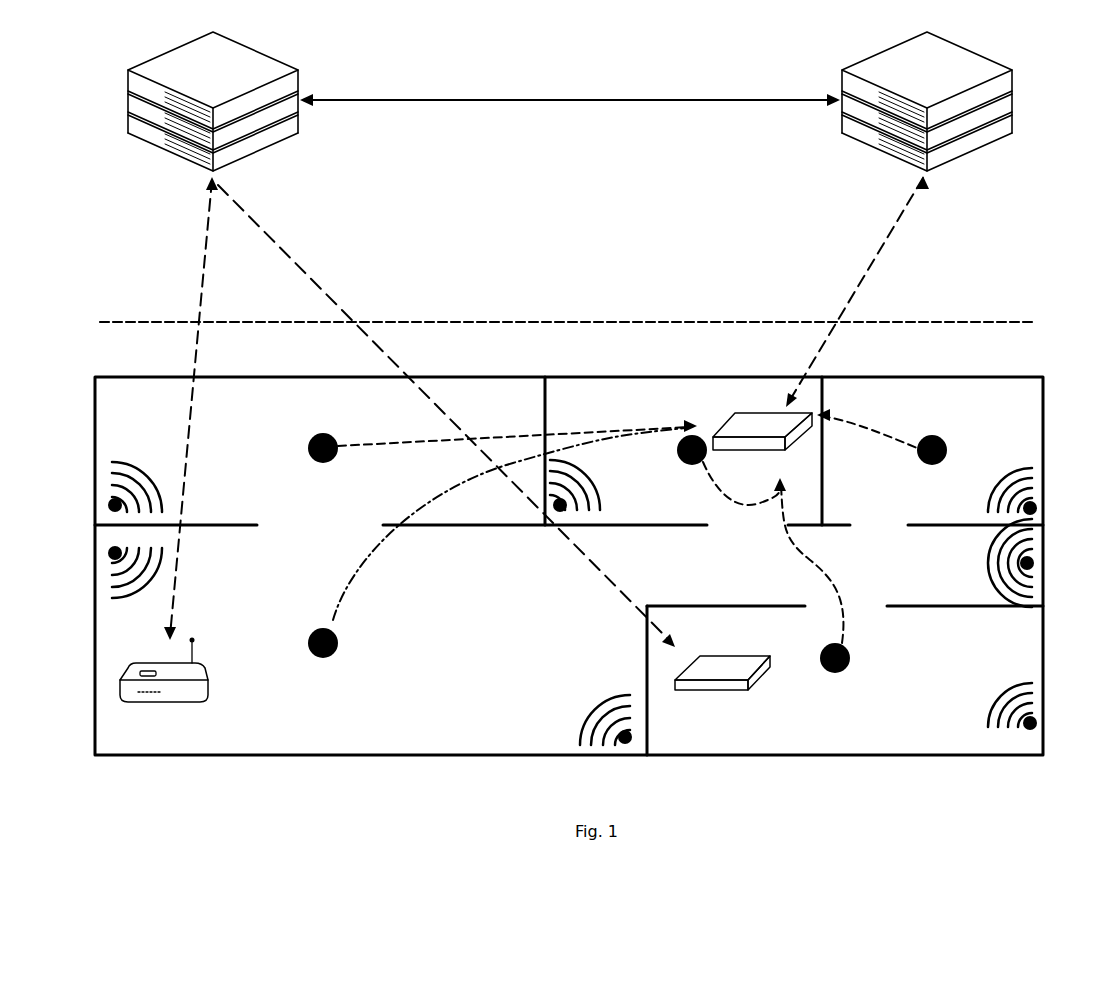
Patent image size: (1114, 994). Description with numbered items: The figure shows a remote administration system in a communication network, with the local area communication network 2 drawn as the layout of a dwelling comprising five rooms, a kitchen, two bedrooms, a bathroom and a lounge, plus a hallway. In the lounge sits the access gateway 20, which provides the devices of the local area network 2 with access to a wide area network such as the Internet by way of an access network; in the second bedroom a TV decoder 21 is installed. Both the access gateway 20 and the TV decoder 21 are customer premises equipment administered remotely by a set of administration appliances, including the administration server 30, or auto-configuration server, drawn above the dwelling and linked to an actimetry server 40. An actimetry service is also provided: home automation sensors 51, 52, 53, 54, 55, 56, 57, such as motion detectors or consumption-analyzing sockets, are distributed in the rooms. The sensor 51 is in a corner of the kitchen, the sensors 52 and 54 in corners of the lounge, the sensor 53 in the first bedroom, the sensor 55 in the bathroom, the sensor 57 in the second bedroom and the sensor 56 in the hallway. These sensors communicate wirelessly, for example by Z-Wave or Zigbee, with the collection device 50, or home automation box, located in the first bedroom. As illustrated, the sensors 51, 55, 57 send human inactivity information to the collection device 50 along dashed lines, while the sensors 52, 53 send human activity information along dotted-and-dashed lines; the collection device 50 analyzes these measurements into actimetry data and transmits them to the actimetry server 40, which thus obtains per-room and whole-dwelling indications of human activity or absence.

The local area communication network 2 is at (905, 757).
The access gateway 20 is at (205, 682).
The TV decoder 21 is at (758, 690).
The administration server 30 is at (280, 135).
The actimetry server 40 is at (994, 135).
The collection device 50 is at (812, 435).
The home automation sensor 51 is at (108, 505).
The home automation sensor 52 is at (108, 553).
The home automation sensor 53 is at (552, 520).
The home automation sensor 54 is at (620, 742).
The home automation sensor 55 is at (1038, 510).
The home automation sensor 56 is at (1036, 563).
The home automation sensor 57 is at (1038, 723).